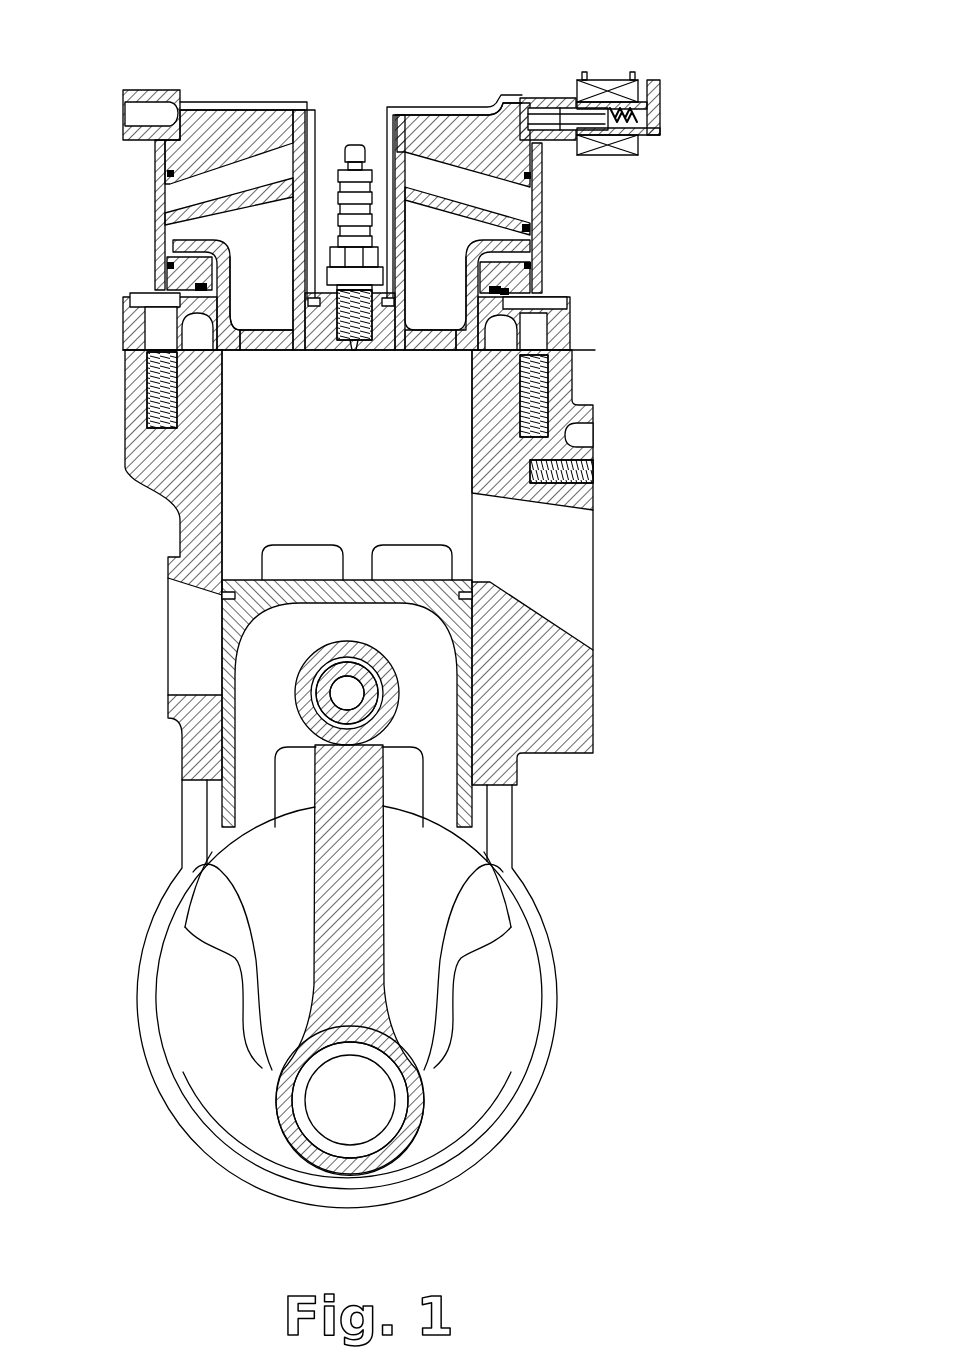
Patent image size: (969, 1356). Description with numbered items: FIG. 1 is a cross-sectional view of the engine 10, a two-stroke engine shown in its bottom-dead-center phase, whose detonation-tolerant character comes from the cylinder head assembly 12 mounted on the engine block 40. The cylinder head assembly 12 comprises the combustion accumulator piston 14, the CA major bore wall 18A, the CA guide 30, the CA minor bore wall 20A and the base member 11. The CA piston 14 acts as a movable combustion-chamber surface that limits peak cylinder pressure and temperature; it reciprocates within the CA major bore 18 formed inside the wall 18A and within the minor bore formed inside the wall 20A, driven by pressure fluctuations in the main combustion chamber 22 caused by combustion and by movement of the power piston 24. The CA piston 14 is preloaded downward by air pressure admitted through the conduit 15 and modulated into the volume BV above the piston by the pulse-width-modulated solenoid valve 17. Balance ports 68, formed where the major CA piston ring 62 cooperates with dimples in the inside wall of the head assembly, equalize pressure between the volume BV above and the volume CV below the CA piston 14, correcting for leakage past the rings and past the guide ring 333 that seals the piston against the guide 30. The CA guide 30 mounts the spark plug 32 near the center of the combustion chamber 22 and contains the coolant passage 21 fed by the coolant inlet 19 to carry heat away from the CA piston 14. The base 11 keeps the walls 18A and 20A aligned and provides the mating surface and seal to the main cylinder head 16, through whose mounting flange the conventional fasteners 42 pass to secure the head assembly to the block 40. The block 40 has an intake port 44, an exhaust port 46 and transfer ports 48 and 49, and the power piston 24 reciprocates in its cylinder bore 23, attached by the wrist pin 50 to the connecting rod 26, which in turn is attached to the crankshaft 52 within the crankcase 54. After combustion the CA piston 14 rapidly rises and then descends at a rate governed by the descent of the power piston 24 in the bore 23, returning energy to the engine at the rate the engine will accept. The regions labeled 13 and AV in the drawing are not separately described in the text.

The engine 10 is at (625, 572).
The base member 11 is at (160, 282).
The cylinder head assembly 12 is at (418, 98).
The combustion chamber (intake side) 13 is at (292, 234).
The combustion accumulator piston 14 is at (226, 190).
The conduit 15 is at (498, 108).
The main cylinder head 16 is at (568, 338).
The pulse width modulated solenoid valve 17 is at (613, 77).
The CA major bore 18 is at (160, 188).
The combustion accumulator major bore wall 18A is at (548, 185).
The coolant inlet 19 is at (135, 115).
The combustion accumulator minor bore wall 20A is at (213, 312).
The coolant passage 21 is at (261, 112).
The main combustion chamber 22 is at (365, 488).
The cylinder bore 23 is at (223, 507).
The power piston 24 is at (433, 617).
The connecting rod 26 is at (313, 927).
The combustion accumulator guide 30 is at (333, 107).
The spark plug 32 is at (355, 128).
The guide ring 333 is at (408, 317).
The engine block 40 is at (193, 530).
The fasteners 42 is at (537, 337).
The intake port 44 is at (210, 653).
The exhaust port 46 is at (553, 568).
The transfer port 48 is at (313, 550).
The transfer port 49 is at (400, 547).
The wrist pin 50 is at (380, 697).
The crankshaft 52 is at (430, 982).
The crankcase 54 is at (500, 1125).
The major CA piston ring 62 is at (547, 245).
The balance ports 68 is at (547, 227).
The intake valve port A AV is at (267, 423).
The volume above CA piston BV is at (452, 188).
The volume below CA piston CV is at (545, 258).